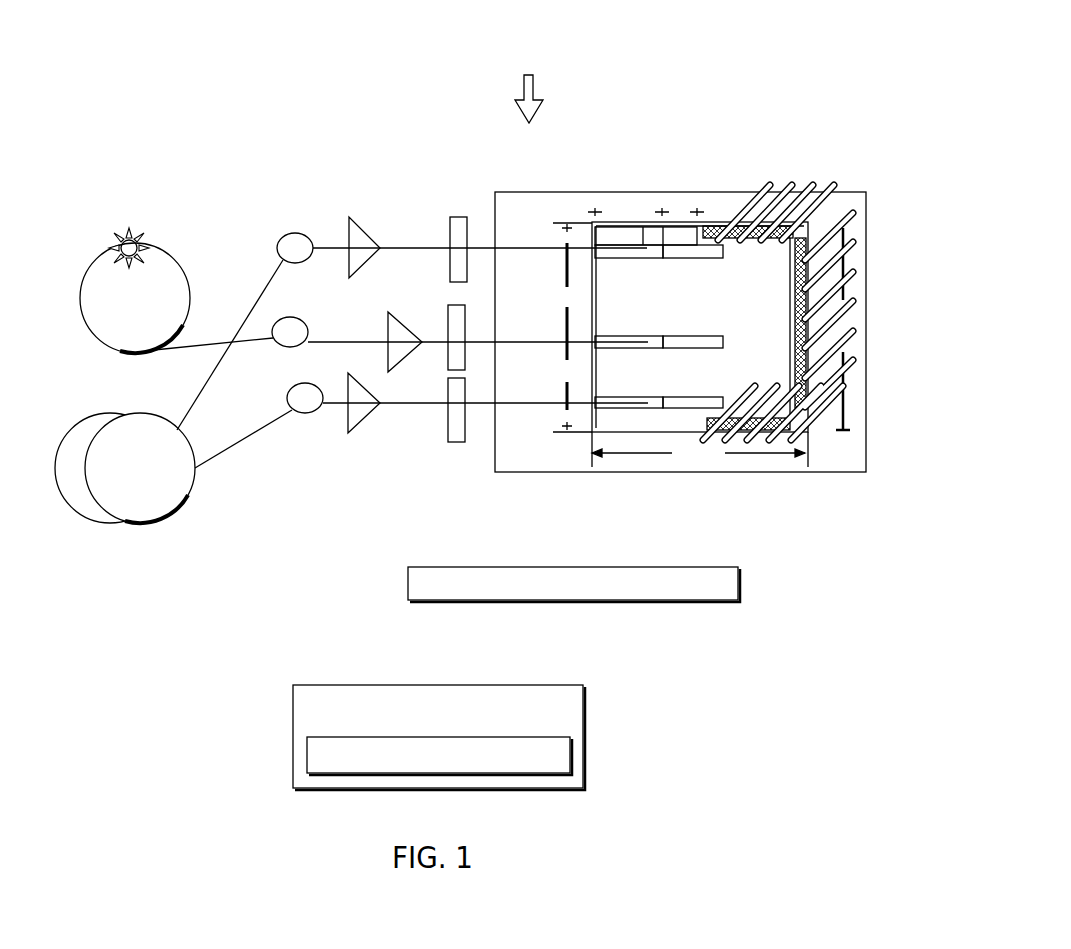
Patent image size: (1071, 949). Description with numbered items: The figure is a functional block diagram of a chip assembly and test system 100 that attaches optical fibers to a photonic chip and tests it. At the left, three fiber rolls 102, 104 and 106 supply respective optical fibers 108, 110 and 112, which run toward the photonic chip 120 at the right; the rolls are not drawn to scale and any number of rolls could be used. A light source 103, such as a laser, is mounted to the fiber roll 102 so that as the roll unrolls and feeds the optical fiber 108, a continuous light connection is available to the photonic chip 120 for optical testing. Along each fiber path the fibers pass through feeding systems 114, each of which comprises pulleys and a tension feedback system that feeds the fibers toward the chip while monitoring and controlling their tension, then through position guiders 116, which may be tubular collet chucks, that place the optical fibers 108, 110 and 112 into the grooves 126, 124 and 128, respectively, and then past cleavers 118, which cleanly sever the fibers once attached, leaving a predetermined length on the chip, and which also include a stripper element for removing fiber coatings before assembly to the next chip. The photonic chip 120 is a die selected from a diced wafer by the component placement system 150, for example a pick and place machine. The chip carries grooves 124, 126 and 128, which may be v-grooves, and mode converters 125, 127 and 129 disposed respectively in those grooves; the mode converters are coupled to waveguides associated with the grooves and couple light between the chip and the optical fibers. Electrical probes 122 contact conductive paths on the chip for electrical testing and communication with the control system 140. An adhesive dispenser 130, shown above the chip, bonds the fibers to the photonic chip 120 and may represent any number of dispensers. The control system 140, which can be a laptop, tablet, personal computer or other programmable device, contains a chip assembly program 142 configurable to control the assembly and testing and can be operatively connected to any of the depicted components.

The chip assembly and test system 100 is at (730, 57).
The fiber roll 102 is at (172, 260).
The light source 103 is at (129, 232).
The fiber roll 104 is at (112, 414).
The fiber roll 106 is at (165, 522).
The optical fiber 108 is at (218, 344).
The optical fiber 110 is at (200, 392).
The optical fiber 112 is at (243, 441).
The feeding systems 114 is at (293, 233).
The position guiders 116 is at (350, 218).
The cleavers 118 is at (450, 221).
The photonic chip 120 is at (776, 473).
The electrical probes 122 is at (780, 167).
The groove 124 is at (607, 243).
The mode converter 125 is at (677, 243).
The groove 126 is at (608, 335).
The mode converter 127 is at (680, 335).
The groove 128 is at (608, 396).
The mode converter 129 is at (680, 396).
The adhesive dispenser 130 is at (535, 88).
The control system 140 is at (583, 685).
The chip assembly program 142 is at (572, 752).
The component placement system 150 is at (740, 583).